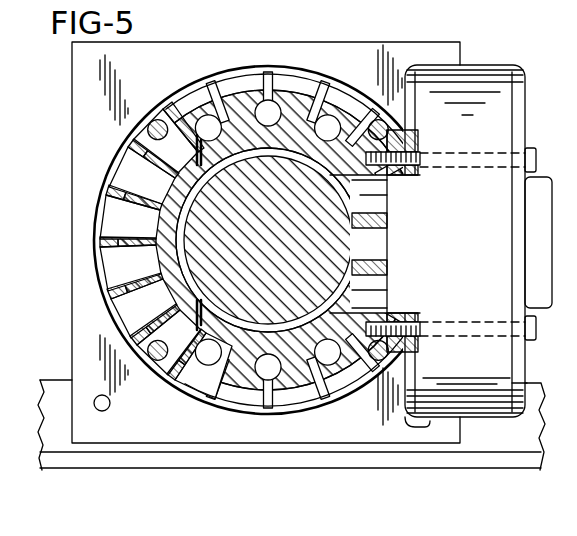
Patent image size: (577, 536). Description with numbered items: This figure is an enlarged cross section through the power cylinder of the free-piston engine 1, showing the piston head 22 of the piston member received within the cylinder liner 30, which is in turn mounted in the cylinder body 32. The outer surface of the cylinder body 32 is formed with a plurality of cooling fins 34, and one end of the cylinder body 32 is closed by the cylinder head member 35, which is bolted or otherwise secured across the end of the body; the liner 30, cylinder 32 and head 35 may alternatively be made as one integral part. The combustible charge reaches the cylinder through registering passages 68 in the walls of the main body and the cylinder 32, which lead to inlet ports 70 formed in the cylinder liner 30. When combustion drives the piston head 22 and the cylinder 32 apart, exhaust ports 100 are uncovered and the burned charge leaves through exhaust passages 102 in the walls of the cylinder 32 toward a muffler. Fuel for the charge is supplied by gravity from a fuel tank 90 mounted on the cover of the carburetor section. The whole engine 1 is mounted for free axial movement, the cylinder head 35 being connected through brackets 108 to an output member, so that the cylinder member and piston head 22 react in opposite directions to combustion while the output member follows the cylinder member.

The motor 1 is at (505, 212).
The piston head 22 is at (290, 228).
The cylinder liner 30 is at (127, 187).
The cylinder body 32 is at (323, 85).
The cooling fins 34 is at (240, 68).
The cylinder head member 35 is at (362, 435).
The registering passages 68 is at (270, 113).
The inlet ports 70 is at (210, 165).
The fuel tank 90 is at (576, 492).
The exhaust ports 100 is at (360, 240).
The exhaust passages 102 is at (380, 245).
The brackets 108 is at (212, 460).